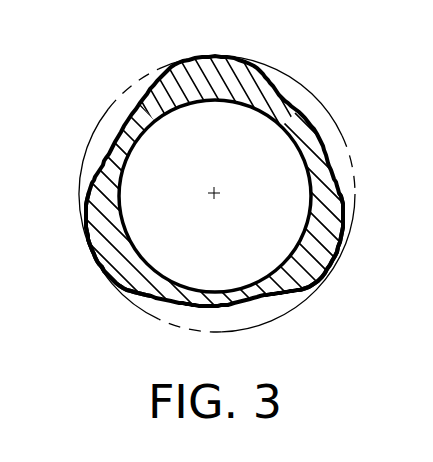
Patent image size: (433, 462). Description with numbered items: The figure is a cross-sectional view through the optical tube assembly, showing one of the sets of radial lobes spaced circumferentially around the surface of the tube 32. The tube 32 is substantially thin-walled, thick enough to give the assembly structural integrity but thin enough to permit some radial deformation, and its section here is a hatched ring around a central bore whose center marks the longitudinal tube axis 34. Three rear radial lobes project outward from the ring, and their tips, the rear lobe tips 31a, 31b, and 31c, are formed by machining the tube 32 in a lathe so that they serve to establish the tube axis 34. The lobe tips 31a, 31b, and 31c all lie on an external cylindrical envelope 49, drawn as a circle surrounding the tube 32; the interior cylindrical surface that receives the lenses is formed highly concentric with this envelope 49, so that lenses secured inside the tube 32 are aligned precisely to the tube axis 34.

The rear lobe tip 31a is at (213, 56).
The rear lobe tip 31b is at (98, 262).
The rear lobe tip 31c is at (340, 257).
The tube 32 is at (268, 338).
The longitudinal tube axis 34 is at (216, 191).
The external cylindrical envelope 49 is at (347, 140).